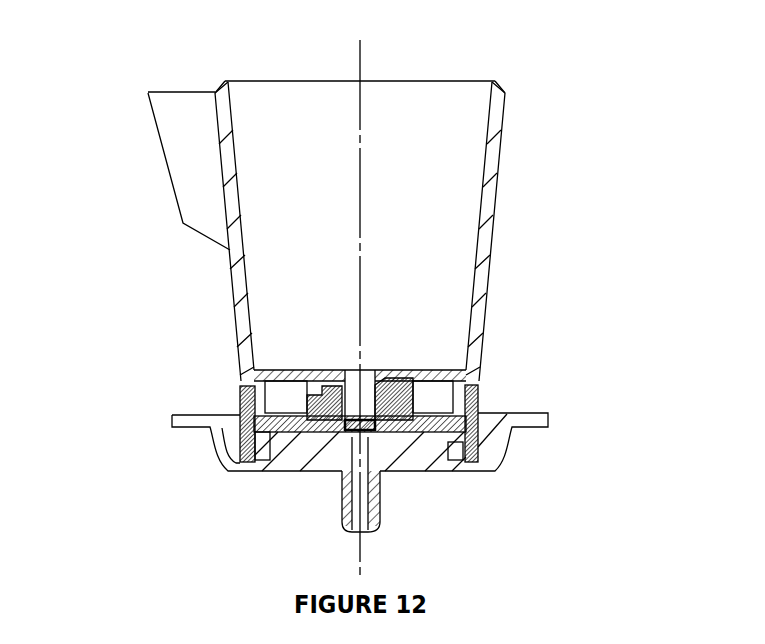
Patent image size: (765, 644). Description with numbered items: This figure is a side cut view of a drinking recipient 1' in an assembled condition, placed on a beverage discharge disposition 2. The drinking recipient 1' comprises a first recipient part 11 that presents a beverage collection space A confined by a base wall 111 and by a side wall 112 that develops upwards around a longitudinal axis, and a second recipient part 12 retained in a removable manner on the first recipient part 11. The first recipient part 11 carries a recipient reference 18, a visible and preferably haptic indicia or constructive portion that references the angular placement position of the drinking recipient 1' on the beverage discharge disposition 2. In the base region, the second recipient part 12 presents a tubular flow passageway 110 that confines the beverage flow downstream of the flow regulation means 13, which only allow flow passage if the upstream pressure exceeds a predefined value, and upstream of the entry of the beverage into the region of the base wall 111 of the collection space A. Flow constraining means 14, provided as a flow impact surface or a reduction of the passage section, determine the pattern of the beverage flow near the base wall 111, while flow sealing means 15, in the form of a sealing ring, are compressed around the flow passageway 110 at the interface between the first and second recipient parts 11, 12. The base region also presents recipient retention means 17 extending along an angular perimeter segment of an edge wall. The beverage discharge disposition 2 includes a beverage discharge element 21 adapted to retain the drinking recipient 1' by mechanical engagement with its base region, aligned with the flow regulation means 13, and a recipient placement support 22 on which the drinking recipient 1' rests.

The drinking recipient 1' is at (335, 64).
The recipient reference 18 is at (170, 171).
The beverage collection space A is at (309, 181).
The side wall 112 is at (515, 231).
The first recipient part 11 is at (217, 231).
The base wall 111 is at (291, 368).
The flow constraining means 14 is at (372, 366).
The flow sealing means 15 is at (399, 371).
The flow passageway 110 is at (353, 391).
The second recipient part 12 is at (482, 392).
The beverage discharge disposition 2 is at (360, 431).
The flow regulation means 13 is at (345, 429).
The recipient retention means 17 is at (481, 451).
The beverage discharge element 21 is at (338, 484).
The recipient placement support 22 is at (428, 505).